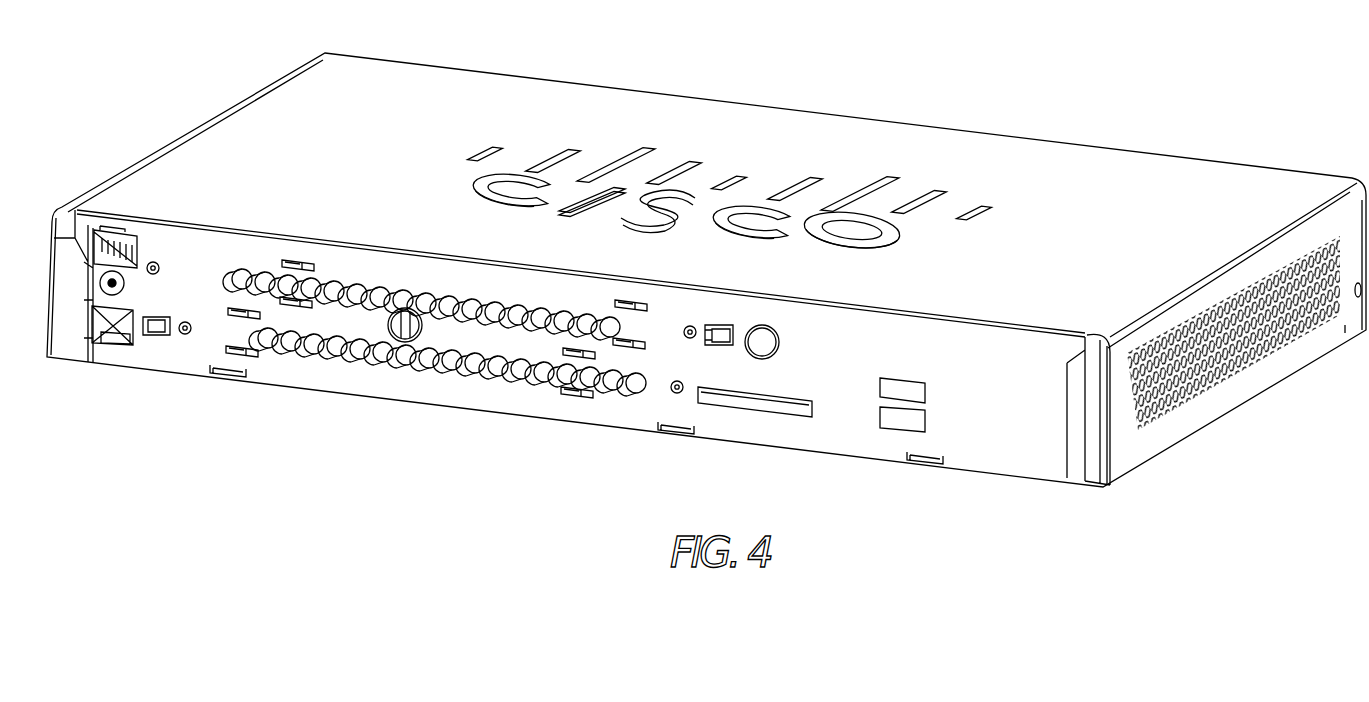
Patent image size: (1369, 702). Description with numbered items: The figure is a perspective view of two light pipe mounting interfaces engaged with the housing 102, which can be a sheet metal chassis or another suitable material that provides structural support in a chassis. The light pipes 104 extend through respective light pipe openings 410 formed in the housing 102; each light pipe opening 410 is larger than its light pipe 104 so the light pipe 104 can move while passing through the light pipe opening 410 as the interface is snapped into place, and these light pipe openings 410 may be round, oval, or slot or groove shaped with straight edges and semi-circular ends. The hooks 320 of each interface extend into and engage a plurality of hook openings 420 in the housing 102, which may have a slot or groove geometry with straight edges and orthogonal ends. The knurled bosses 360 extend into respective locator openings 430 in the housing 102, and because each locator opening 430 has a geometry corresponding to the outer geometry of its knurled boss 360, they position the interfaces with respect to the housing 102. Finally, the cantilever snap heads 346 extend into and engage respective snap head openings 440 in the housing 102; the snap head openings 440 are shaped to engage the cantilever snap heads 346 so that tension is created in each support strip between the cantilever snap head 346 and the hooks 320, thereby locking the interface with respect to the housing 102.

The housing 102 is at (840, 116).
The light pipe 104 is at (469, 296).
The hook 320 is at (303, 260).
The cantilever snap head 346 is at (147, 338).
The knurled boss 360 is at (153, 262).
The light pipe opening 410 is at (230, 271).
The hook opening 420 is at (282, 263).
The locator opening 430 is at (160, 268).
The snap head opening 440 is at (158, 317).